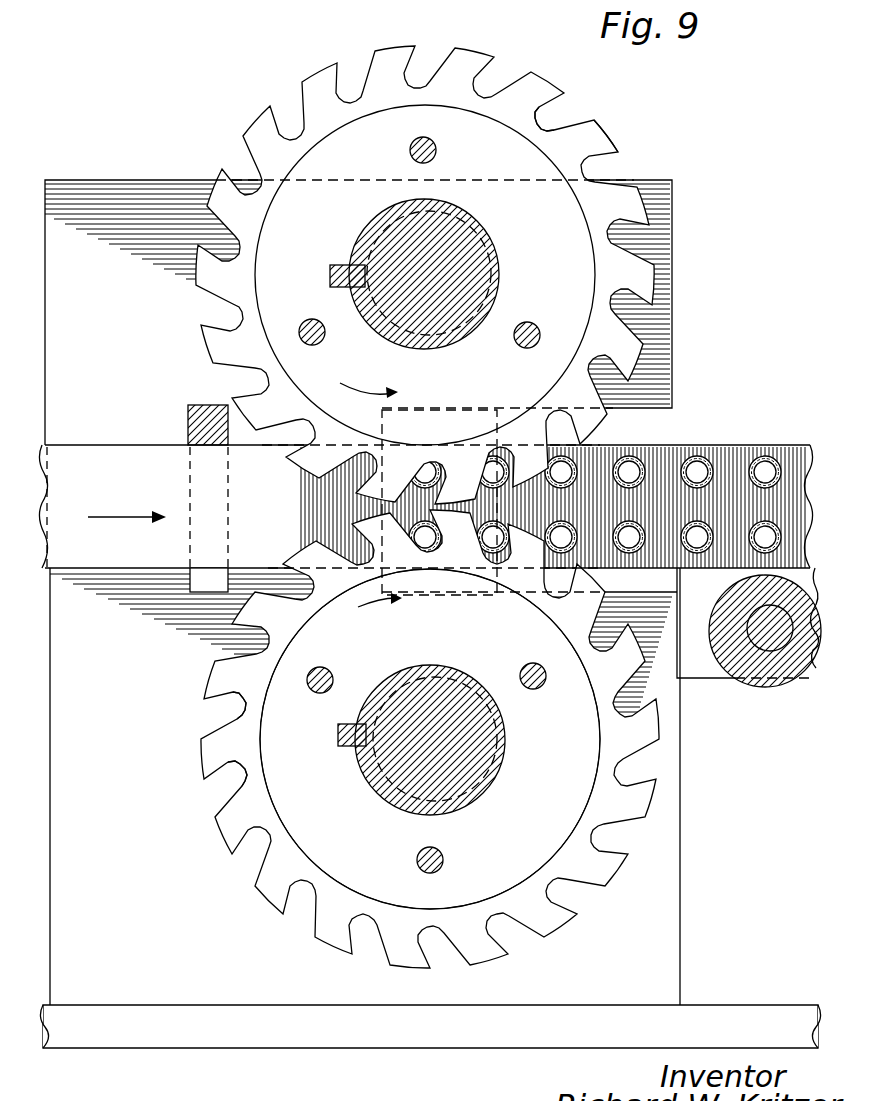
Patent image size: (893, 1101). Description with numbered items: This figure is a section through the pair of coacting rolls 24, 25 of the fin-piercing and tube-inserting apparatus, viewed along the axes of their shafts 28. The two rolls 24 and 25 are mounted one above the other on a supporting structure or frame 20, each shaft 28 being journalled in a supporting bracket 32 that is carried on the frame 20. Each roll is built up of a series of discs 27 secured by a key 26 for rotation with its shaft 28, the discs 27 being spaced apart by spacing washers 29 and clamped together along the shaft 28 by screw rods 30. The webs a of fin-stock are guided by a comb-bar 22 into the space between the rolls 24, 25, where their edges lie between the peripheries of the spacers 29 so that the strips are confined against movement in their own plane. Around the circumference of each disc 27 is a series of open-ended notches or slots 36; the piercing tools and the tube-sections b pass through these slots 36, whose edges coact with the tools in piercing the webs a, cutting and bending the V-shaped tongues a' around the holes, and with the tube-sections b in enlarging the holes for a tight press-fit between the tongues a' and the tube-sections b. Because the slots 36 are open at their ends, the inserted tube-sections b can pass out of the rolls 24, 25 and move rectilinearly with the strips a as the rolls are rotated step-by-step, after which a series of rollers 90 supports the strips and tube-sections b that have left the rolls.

The supporting structure or frame 20 is at (739, 1000).
The comb-bar 22 is at (188, 420).
The roll 24 is at (427, 481).
The roll 25 is at (553, 842).
The key 26 is at (345, 747).
The discs or elements 27 is at (375, 122).
The shaft 28 is at (492, 268).
The spacing washers 29 is at (262, 217).
The screw rods 30 is at (536, 690).
The supporting bracket 32 is at (682, 808).
The notches or slots 36 is at (554, 118).
The rollers 90 is at (770, 688).
The webs of fin-stock a is at (425, 506).
The V-shaped tongues a' is at (617, 128).
The tube-sections b is at (770, 455).